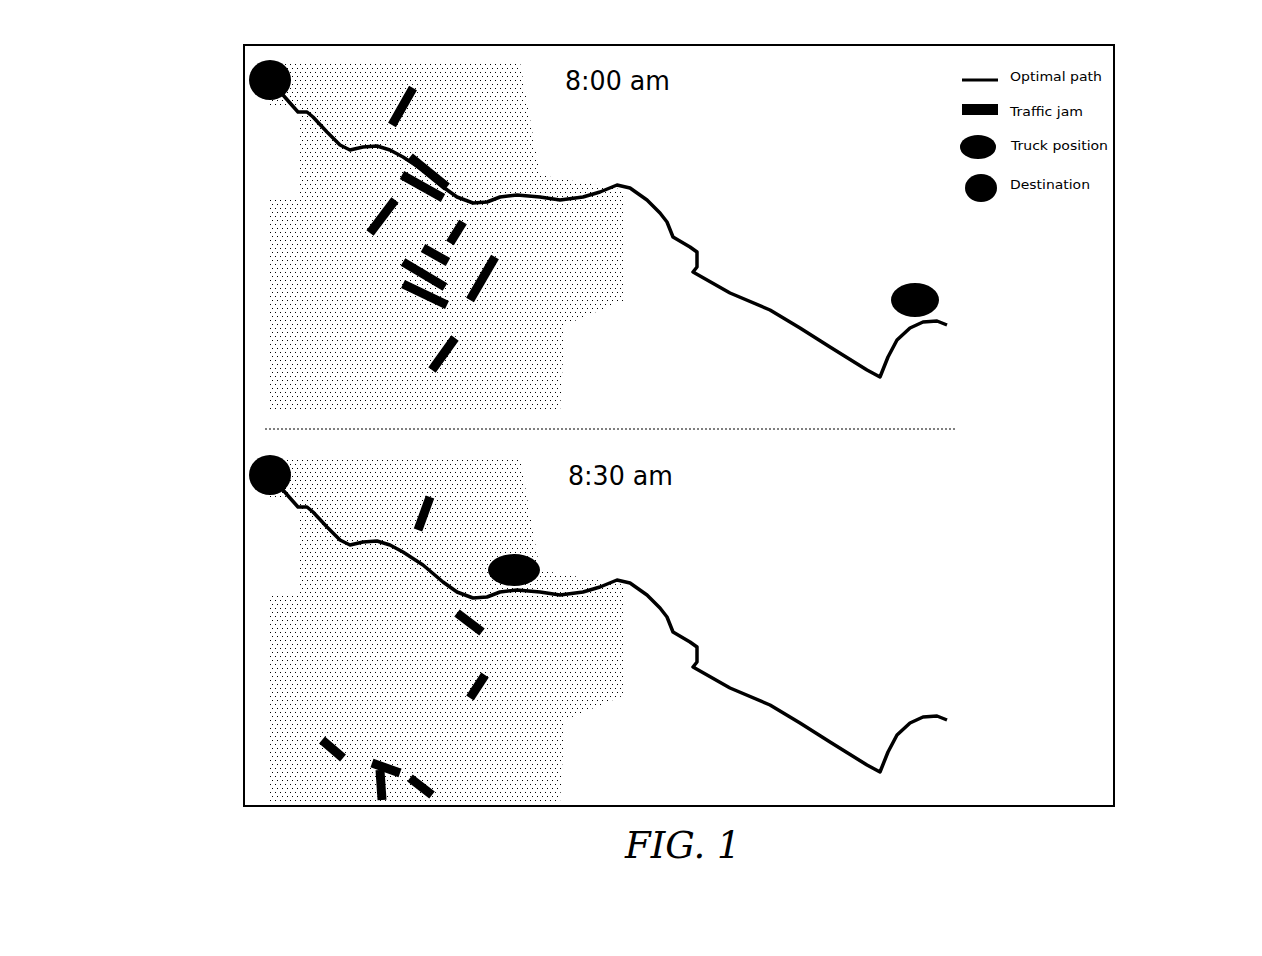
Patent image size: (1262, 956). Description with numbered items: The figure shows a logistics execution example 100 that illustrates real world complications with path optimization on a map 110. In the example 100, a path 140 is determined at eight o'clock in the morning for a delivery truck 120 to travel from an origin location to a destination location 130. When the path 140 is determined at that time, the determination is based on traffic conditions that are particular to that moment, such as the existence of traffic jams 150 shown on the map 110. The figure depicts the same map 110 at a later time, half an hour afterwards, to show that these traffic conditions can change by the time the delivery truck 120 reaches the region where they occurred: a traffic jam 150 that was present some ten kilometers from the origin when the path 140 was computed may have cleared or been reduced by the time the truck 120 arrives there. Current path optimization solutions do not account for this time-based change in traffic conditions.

The logistics execution example 100 is at (1176, 134).
The map 110 is at (333, 303).
The delivery truck 120 is at (940, 293).
The destination location 130 is at (260, 95).
The path 140 is at (895, 350).
The traffic jams 150 is at (485, 275).